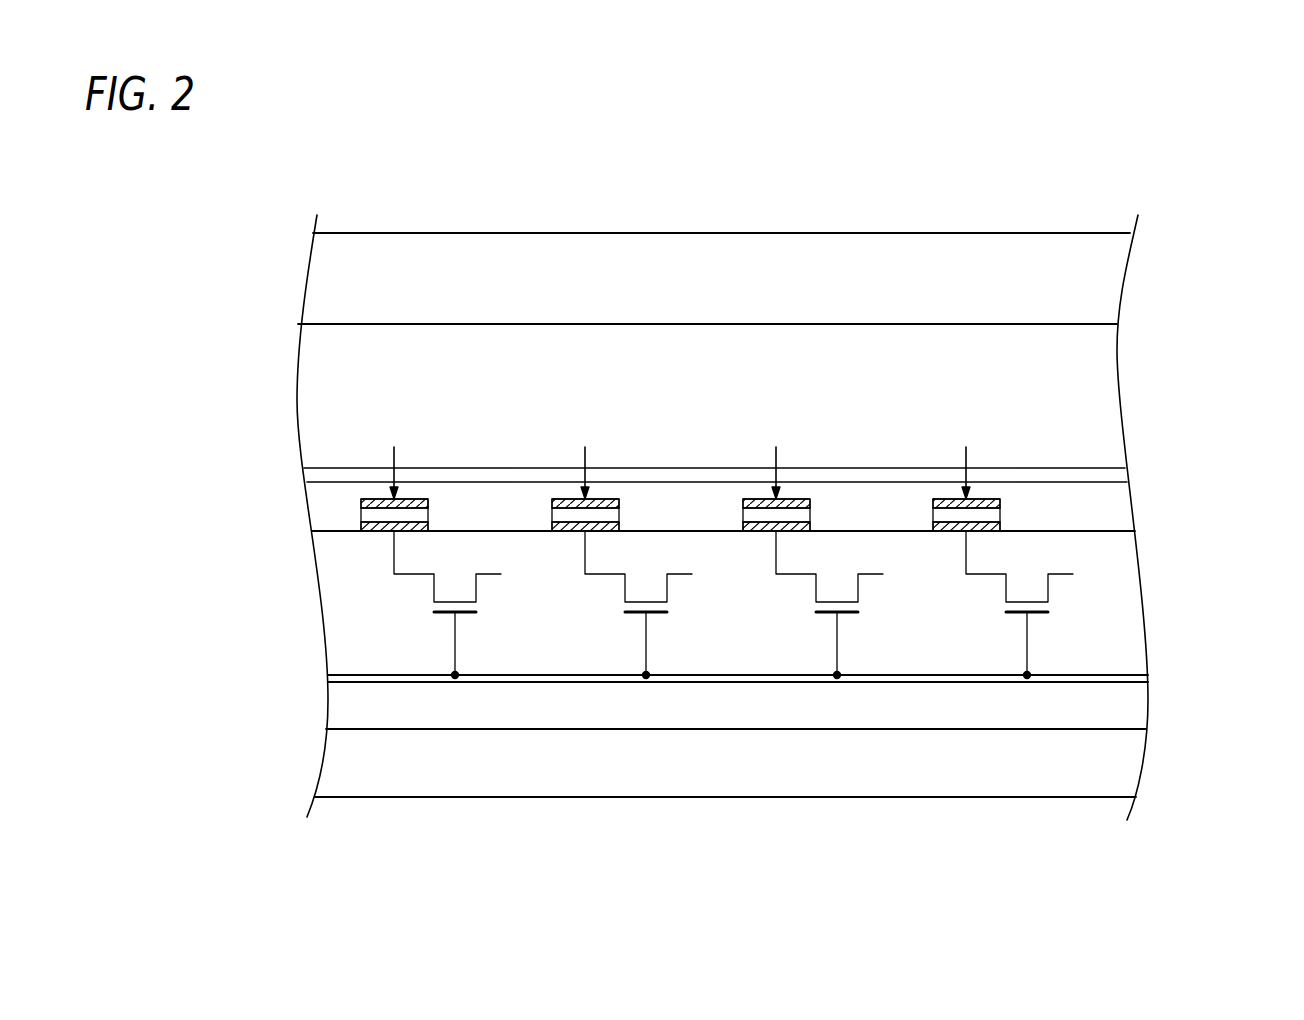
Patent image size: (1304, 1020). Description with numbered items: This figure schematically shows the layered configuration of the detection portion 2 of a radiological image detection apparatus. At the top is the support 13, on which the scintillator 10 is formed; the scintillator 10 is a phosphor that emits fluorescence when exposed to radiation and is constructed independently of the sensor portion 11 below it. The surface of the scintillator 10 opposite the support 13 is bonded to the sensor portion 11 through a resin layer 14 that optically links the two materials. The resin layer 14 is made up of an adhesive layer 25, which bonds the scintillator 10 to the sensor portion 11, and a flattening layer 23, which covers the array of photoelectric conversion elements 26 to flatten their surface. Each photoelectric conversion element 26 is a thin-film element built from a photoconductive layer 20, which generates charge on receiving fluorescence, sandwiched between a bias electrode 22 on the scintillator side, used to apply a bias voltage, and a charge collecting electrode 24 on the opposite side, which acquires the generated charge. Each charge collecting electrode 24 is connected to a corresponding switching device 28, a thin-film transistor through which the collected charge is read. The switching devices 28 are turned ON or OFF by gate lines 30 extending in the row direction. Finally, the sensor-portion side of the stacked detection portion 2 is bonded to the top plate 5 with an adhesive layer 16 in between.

The detection portion 2 is at (1082, 188).
The top plate 5 is at (1127, 770).
The scintillator 10 is at (1102, 395).
The sensor portion 11 is at (744, 531).
The support 13 is at (1102, 282).
The resin layer 14 is at (656, 494).
The adhesive layer 16 is at (1127, 706).
The photoconductive layer 20 is at (810, 516).
The bias electrode 22 is at (810, 503).
The flattening layer 23 is at (325, 506).
The charge collecting electrode 24 is at (810, 529).
The adhesive layer 25 is at (325, 472).
The photoelectric conversion element 26 is at (709, 455).
The switching device 28 is at (484, 594).
The gate line 30 is at (350, 674).